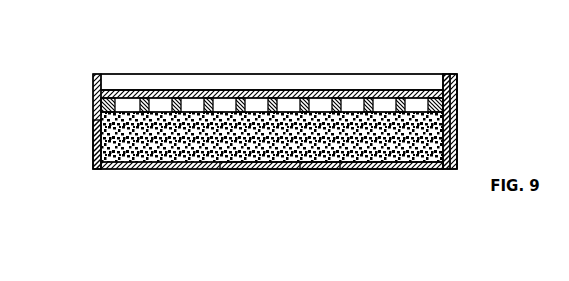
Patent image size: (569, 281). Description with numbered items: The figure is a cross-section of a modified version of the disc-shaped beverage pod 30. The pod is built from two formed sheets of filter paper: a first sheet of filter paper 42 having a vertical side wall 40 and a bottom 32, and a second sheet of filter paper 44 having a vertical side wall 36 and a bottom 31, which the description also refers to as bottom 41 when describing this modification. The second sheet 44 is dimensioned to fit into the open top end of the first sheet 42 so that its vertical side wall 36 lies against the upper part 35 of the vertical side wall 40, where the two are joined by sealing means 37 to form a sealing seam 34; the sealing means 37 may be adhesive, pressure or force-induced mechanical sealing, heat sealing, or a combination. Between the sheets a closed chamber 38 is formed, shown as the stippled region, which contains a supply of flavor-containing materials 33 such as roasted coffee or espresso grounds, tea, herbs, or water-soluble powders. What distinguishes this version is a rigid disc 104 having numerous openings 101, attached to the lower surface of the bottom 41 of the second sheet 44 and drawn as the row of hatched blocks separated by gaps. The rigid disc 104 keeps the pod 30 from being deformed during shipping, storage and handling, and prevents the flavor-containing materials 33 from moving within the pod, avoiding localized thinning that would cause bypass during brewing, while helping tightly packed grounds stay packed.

The beverage pod 30 is at (78, 78).
The bottom of second sheet 31 is at (165, 82).
The bottom of second sheet 41 is at (208, 95).
The second sheet of filter paper 44 is at (337, 80).
The openings 101 is at (282, 102).
The rigid disc 104 is at (238, 102).
The vertical side wall of first sheet 40 is at (93, 128).
The closed chamber 38 is at (92, 157).
The sealing seam 34 is at (470, 88).
The vertical side wall of second sheet 36 is at (446, 74).
The sealing means 37 is at (453, 73).
The upper part of vertical side wall 35 is at (461, 78).
The bottom of first sheet 32 is at (152, 170).
The flavor-containing materials 33 is at (258, 170).
The first sheet of filter paper 42 is at (333, 179).